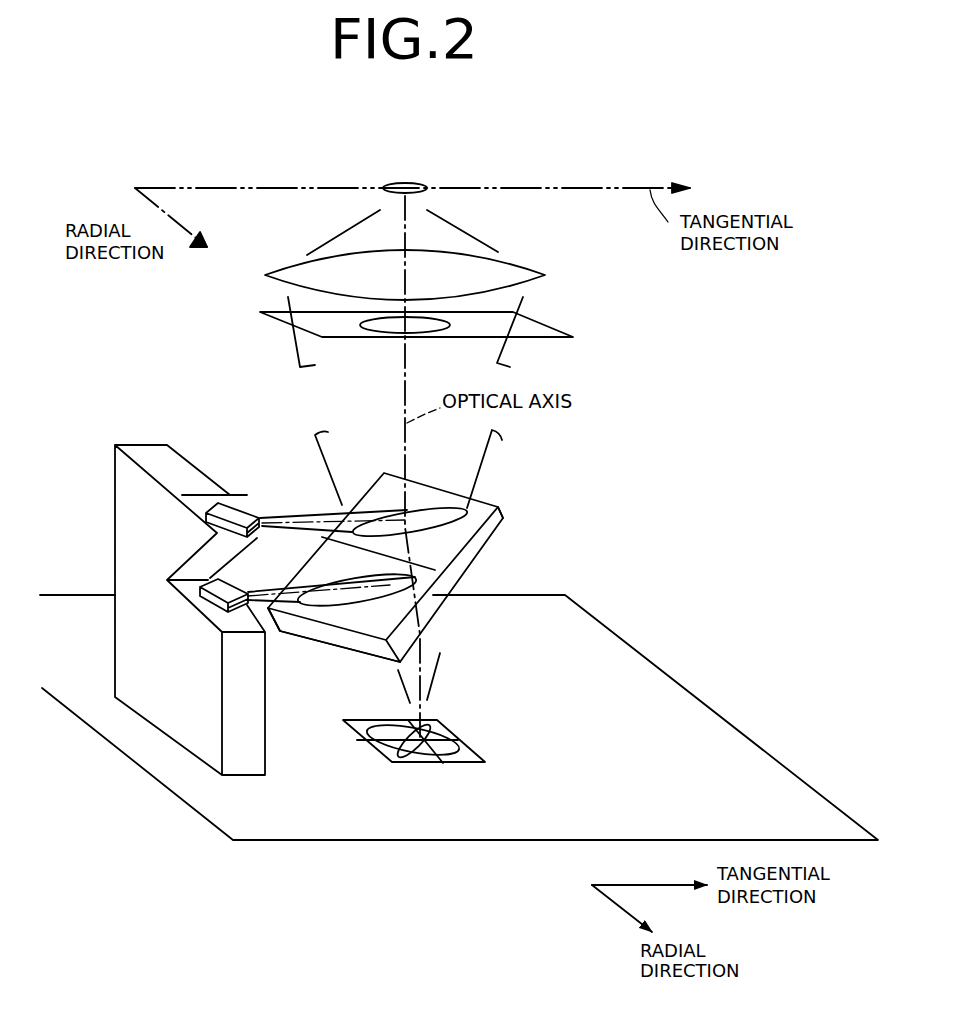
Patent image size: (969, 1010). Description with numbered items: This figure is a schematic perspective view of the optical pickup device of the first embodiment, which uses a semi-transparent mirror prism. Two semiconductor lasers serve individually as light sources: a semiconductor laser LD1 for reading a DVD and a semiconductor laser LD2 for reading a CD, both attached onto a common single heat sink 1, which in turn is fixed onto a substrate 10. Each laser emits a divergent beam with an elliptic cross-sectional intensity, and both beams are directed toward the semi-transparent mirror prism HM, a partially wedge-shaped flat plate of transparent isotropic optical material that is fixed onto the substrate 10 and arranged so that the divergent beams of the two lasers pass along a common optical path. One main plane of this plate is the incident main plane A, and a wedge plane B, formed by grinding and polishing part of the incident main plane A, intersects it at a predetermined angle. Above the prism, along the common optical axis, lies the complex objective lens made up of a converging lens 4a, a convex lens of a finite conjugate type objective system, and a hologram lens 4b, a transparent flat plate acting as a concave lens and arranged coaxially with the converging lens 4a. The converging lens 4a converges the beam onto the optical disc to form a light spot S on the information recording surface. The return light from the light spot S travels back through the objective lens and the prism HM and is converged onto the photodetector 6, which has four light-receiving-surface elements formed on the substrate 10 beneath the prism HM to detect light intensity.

The heat sink 1 is at (138, 446).
The semiconductor laser LD1 is at (247, 503).
The semiconductor laser LD2 is at (205, 598).
The converging lens 4a is at (545, 275).
The hologram lens 4b is at (558, 333).
The light spot S is at (425, 192).
The incident main plane A is at (490, 497).
The semi-transparent mirror prism HM is at (498, 512).
The wedge plane B is at (385, 622).
The photodetector 6 is at (437, 720).
The substrate 10 is at (638, 660).